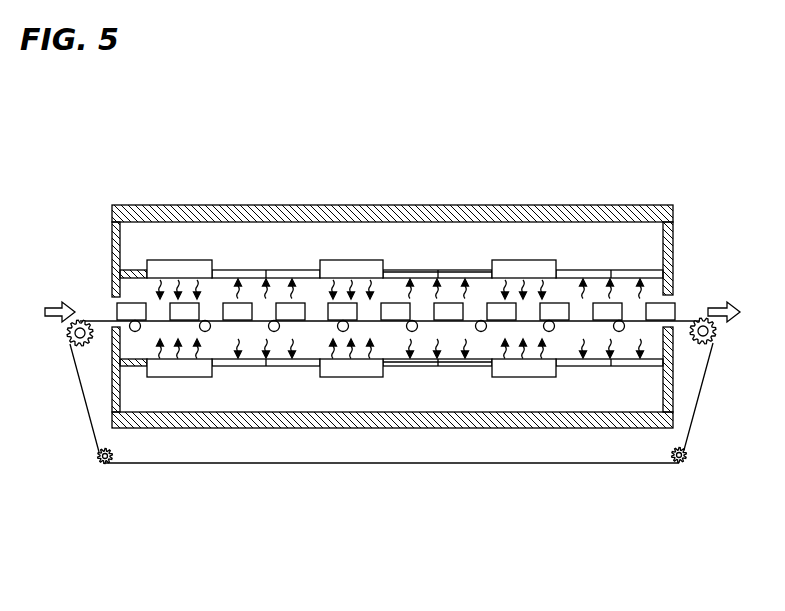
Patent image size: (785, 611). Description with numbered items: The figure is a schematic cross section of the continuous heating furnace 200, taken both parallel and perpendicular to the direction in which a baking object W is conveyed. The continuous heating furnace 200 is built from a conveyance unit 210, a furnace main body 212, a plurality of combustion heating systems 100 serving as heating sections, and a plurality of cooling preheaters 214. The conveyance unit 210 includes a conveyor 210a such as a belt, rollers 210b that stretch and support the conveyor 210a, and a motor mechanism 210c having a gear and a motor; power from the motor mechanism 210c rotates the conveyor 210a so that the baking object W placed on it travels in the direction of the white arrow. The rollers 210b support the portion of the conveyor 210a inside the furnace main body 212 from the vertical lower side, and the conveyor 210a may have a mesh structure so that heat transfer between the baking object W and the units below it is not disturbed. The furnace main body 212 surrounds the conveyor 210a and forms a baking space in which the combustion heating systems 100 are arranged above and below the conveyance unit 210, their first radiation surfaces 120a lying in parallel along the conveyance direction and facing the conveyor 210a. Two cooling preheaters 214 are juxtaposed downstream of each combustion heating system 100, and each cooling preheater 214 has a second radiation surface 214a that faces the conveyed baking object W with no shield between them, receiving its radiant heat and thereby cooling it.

The continuous heating furnace 200 is at (716, 86).
The furnace main body 212 is at (583, 205).
The cooling preheater 214 is at (287, 271).
The second radiation surface 214a is at (305, 271).
The first radiation surface 120a is at (397, 271).
The combustion heating system 100 is at (181, 259).
The baking object W is at (674, 303).
The conveyance unit 210 is at (722, 530).
The conveyor 210a is at (608, 463).
The roller 210b is at (575, 330).
The motor mechanism 210c is at (683, 463).